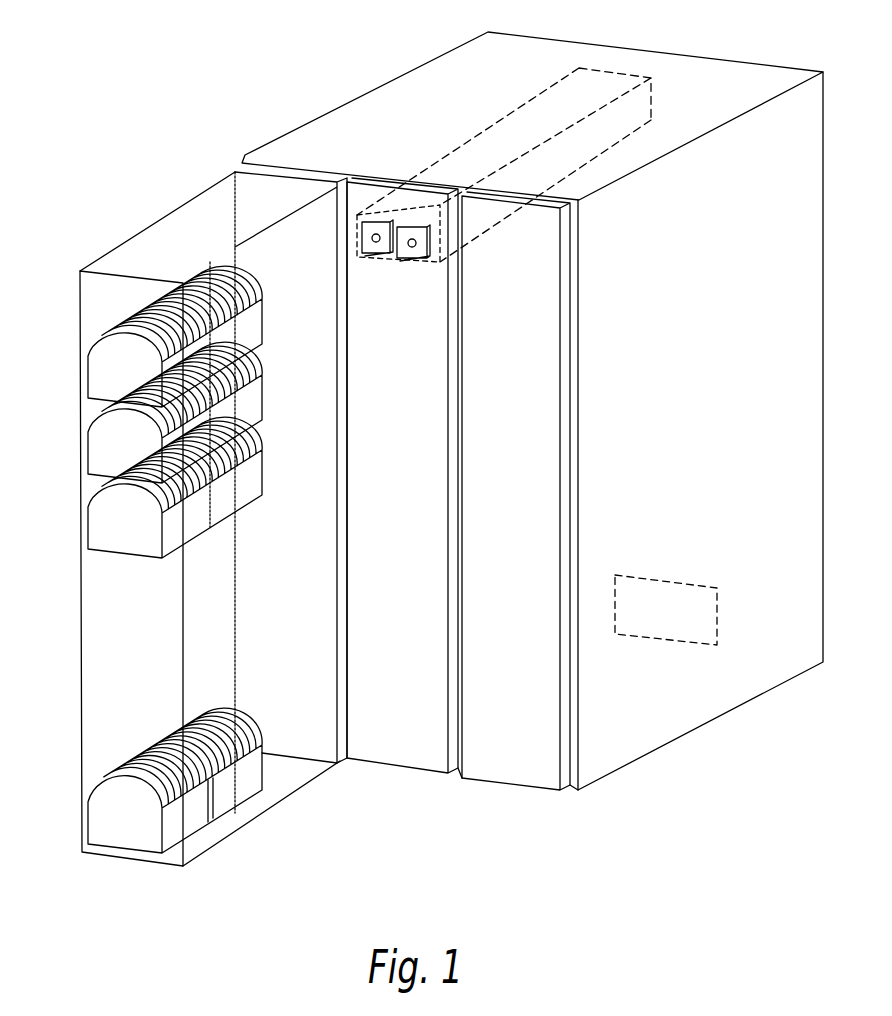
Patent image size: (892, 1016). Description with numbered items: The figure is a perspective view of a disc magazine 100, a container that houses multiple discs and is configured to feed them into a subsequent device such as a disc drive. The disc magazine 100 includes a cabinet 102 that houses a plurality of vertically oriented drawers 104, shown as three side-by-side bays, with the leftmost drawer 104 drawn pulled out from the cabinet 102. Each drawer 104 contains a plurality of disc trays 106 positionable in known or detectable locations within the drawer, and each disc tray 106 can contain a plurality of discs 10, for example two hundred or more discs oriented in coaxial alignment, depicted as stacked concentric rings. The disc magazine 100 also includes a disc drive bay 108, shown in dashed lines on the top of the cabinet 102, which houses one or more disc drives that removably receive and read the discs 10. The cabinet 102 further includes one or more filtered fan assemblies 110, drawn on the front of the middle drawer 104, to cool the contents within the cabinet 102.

The disc magazine 100 is at (148, 90).
The cabinet 102 is at (358, 108).
The drawers 104 is at (100, 712).
The disc trays 106 is at (246, 793).
The disc drive bay 108 is at (593, 75).
The filtered fan assemblies 110 is at (376, 238).
The discs 10 is at (102, 792).